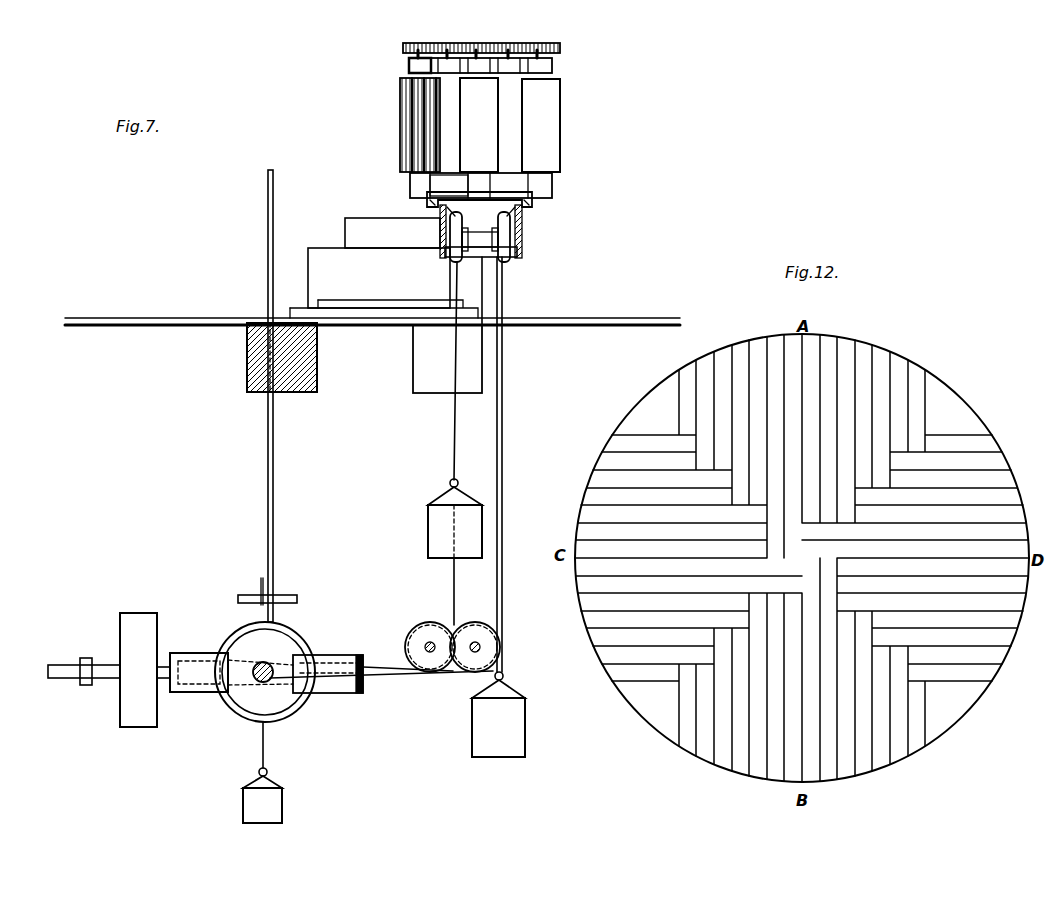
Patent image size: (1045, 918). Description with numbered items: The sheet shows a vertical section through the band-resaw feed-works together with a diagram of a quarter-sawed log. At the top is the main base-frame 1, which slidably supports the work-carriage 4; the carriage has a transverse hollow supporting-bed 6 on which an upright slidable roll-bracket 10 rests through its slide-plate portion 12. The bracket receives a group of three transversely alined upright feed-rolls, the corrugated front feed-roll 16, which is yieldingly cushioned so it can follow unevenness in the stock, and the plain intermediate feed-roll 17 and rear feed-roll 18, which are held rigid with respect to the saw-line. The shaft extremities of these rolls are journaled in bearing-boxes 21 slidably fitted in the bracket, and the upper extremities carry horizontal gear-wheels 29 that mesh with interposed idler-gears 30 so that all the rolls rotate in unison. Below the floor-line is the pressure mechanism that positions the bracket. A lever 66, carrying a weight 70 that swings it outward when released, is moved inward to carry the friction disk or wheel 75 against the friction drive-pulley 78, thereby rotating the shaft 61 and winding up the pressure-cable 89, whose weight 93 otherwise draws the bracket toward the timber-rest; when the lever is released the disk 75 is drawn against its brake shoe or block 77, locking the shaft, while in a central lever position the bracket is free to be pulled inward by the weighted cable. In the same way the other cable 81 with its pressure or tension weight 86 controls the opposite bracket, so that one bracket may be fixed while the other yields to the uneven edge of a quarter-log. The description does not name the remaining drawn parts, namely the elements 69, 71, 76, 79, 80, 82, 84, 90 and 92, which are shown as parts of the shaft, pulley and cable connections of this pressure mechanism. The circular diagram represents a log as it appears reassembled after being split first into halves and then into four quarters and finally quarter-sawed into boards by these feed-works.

The main base-frame 1 is at (384, 283).
The work-carriage 4 is at (392, 233).
The transverse hollow supporting-bed 6 is at (526, 240).
The upright slidable roll-bracket 10 is at (510, 125).
The slide-plate portion 12 is at (449, 185).
The front upright feed-roll 16 is at (400, 105).
The intermediate upright feed-roll 17 is at (479, 125).
The rear upright feed-roll 18 is at (541, 125).
The bearing-boxes 21 is at (408, 63).
The horizontal gear-wheels 29 is at (562, 47).
The idler-gears 30 is at (487, 43).
The shaft 61 is at (262, 682).
The lever 66 is at (266, 268).
The cord 69 is at (268, 746).
The weight 70 is at (285, 799).
The cross head 71 is at (274, 585).
The friction disk or wheel 75 is at (265, 645).
The wheel 76 is at (235, 713).
The brake shoe or block 77 is at (194, 694).
The friction drive-pulley 78 is at (218, 653).
The shaft 79 is at (58, 673).
The pulley 80 is at (138, 719).
The cable 81 is at (455, 432).
The pulley 82 is at (492, 648).
The pulleys 84 is at (450, 256).
The pressure or tension weight 86 is at (429, 525).
The pressure-cable 89 is at (505, 294).
The bracket 90 is at (521, 211).
The pulley 92 is at (424, 664).
The weight 93 is at (526, 741).